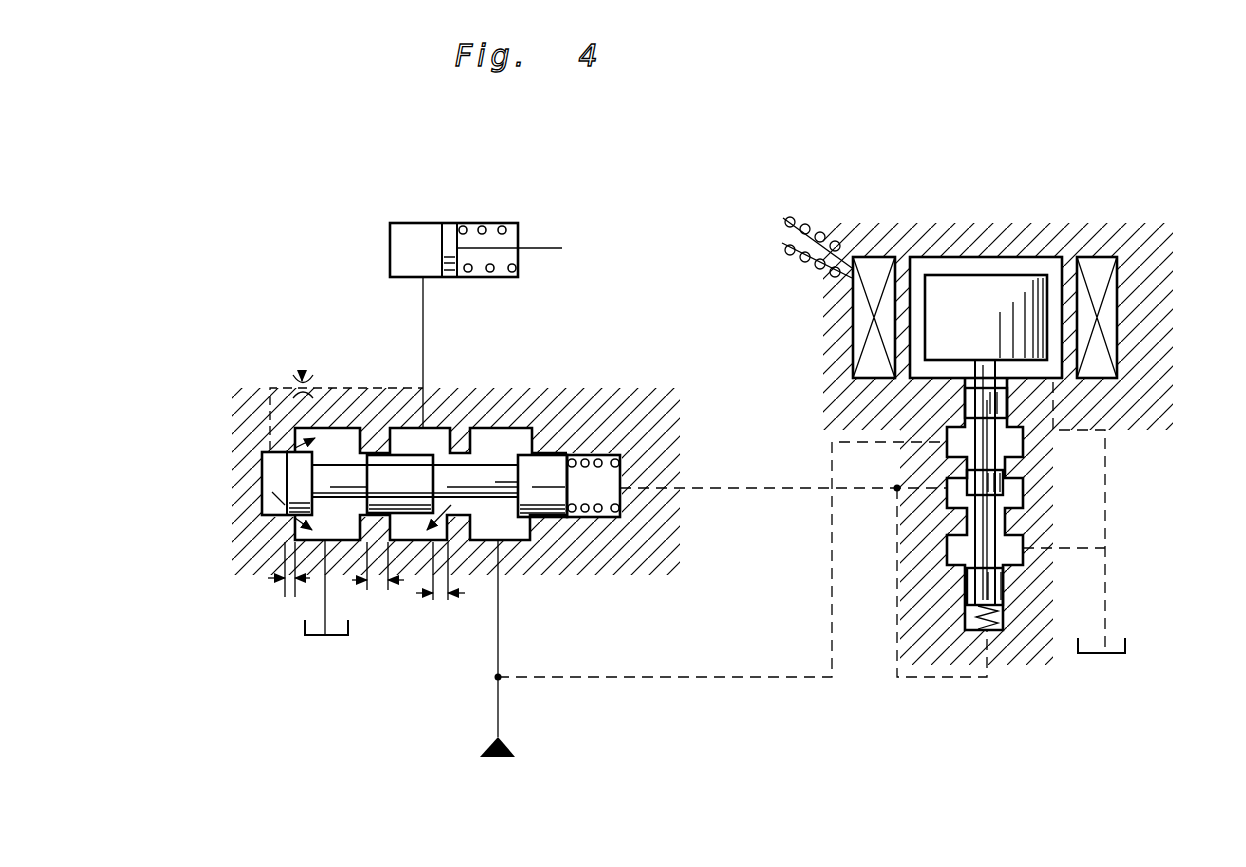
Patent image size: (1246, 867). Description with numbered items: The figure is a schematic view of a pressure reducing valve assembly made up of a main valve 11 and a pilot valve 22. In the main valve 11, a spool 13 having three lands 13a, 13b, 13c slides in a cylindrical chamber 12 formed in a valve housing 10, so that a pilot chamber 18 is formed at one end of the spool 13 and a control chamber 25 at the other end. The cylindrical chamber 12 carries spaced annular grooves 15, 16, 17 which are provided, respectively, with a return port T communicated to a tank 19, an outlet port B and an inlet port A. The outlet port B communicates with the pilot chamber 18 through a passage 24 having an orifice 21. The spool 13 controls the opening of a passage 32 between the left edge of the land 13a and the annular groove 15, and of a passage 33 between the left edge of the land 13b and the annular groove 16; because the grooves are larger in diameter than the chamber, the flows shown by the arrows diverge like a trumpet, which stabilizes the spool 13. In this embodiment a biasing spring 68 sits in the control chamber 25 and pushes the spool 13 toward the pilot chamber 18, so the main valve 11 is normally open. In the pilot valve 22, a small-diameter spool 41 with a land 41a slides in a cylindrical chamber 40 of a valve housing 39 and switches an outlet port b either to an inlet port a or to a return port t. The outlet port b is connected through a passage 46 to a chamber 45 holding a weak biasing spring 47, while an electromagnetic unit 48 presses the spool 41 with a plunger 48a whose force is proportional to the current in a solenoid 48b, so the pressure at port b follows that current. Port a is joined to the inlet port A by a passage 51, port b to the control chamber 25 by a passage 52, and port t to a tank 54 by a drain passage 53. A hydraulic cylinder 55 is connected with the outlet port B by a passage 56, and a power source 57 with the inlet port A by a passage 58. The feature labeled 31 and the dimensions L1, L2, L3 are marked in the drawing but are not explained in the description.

The valve housing 10 is at (583, 540).
The main valve 11 is at (205, 415).
The cylindrical chamber 12 is at (460, 522).
The spool 13 is at (408, 477).
The land 13a is at (270, 455).
The land 13b is at (397, 463).
The land 13c is at (555, 470).
The annular groove 15 is at (293, 528).
The annular groove 16 is at (417, 542).
The annular groove 17 is at (550, 540).
The pilot chamber 18 is at (285, 476).
The tank 19 is at (337, 622).
The orifice 21 is at (300, 370).
The pilot valve 22 is at (1007, 444).
The passage 24 is at (302, 370).
The control chamber 25 is at (607, 485).
The groove 31 is at (430, 440).
The passage 32 is at (295, 450).
The passage 33 is at (380, 455).
The valve housing 39 is at (930, 617).
The cylindrical chamber 40 is at (965, 520).
The spool 41 is at (1015, 545).
The land 41a is at (1003, 482).
The chamber 45 is at (992, 585).
The passage 46 is at (903, 563).
The biasing spring 47 is at (982, 623).
The electromagnetic unit 48 is at (1120, 270).
The plunger 48a is at (998, 292).
The solenoid 48b is at (1110, 309).
The passage 51 is at (760, 680).
The passage 52 is at (860, 490).
The drain passage 53 is at (1105, 583).
The tank 54 is at (1112, 650).
The hydraulic cylinder 55 is at (408, 233).
The passage 56 is at (517, 275).
The power source 57 is at (508, 745).
The passage 58 is at (498, 695).
The biasing spring 68 is at (600, 517).
The inlet port A is at (522, 533).
The outlet port B is at (435, 430).
The return port T is at (307, 603).
The inlet port a is at (947, 440).
The outlet port b is at (947, 488).
The return port t is at (1075, 583).
The dimension L1 is at (440, 586).
The dimension L2 is at (278, 578).
The dimension L3 is at (378, 580).